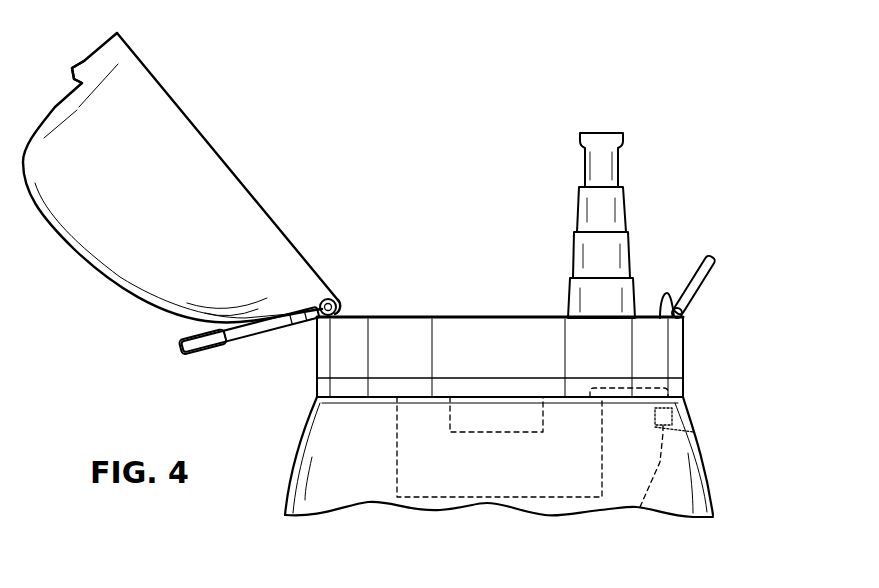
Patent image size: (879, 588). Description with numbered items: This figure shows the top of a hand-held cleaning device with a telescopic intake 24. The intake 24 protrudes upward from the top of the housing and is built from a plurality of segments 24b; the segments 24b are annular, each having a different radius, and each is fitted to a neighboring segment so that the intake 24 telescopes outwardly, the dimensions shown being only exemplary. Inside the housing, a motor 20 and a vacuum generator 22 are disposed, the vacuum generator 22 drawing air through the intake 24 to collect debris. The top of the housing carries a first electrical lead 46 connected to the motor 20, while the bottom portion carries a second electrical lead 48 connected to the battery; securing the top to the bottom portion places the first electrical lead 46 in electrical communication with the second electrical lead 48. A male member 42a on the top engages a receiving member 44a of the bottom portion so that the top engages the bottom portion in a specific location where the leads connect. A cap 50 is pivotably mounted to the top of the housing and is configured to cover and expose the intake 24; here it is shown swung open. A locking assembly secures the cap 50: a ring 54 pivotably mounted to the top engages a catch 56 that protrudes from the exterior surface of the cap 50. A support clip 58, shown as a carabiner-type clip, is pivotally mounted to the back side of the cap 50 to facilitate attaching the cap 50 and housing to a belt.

The motor 20 is at (418, 458).
The vacuum generator 22 is at (448, 417).
The intake 24 is at (594, 225).
The segments 24b is at (616, 173).
The male member 42a is at (675, 400).
The receiving member 44a is at (692, 425).
The first electrical lead 46 is at (612, 380).
The second electrical lead 48 is at (660, 460).
The cap 50 is at (90, 242).
The ring 54 is at (705, 343).
The catch 56 is at (79, 58).
The support clip 58 is at (172, 350).